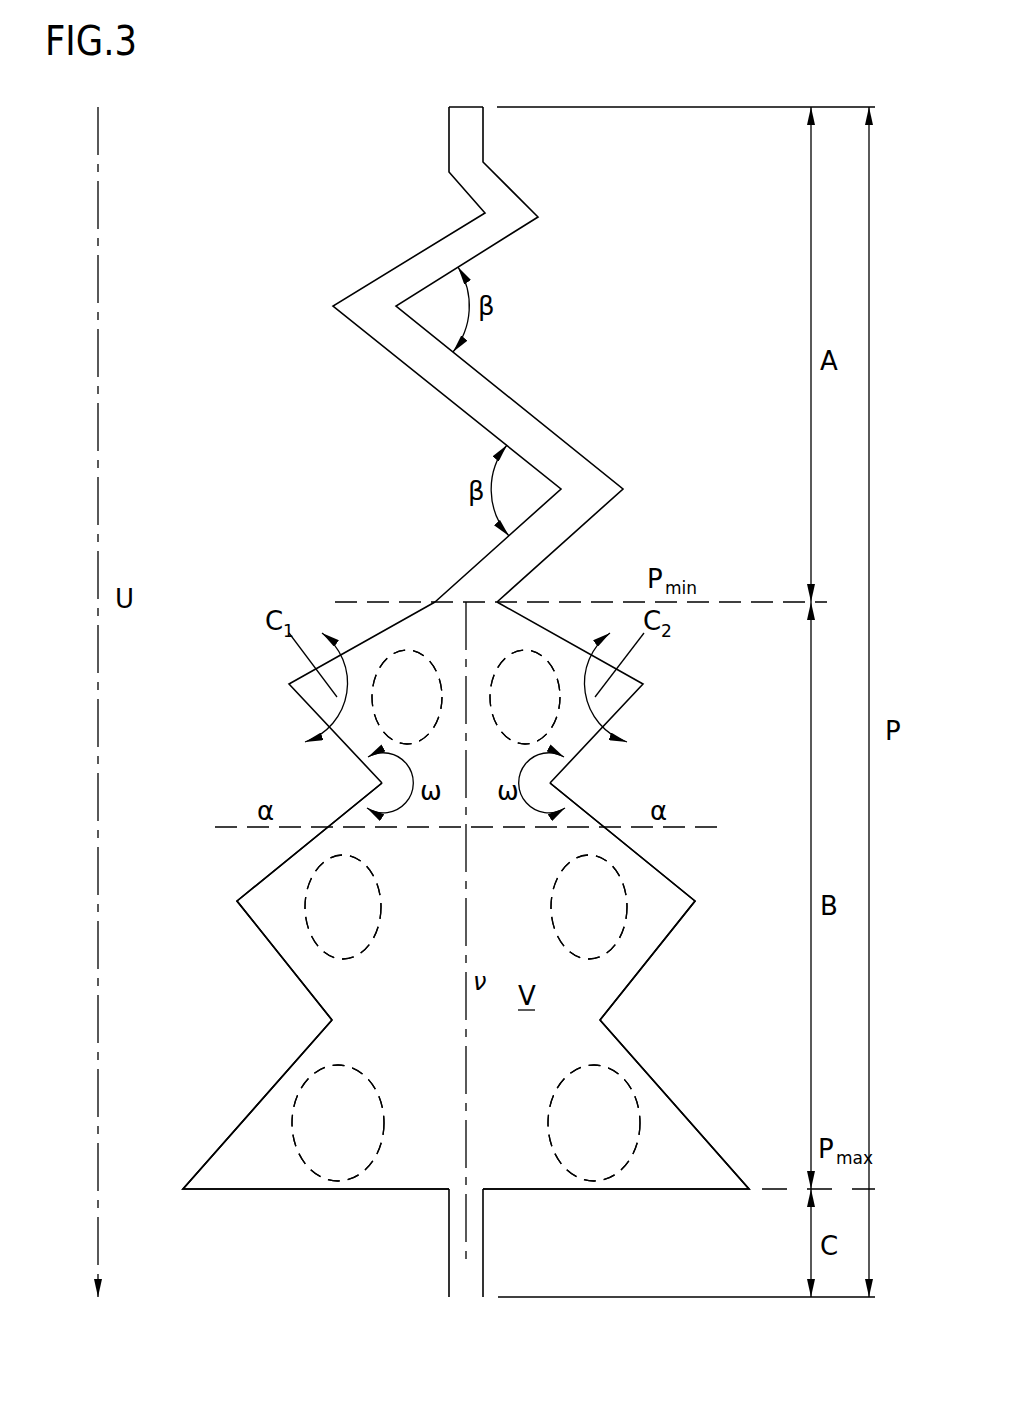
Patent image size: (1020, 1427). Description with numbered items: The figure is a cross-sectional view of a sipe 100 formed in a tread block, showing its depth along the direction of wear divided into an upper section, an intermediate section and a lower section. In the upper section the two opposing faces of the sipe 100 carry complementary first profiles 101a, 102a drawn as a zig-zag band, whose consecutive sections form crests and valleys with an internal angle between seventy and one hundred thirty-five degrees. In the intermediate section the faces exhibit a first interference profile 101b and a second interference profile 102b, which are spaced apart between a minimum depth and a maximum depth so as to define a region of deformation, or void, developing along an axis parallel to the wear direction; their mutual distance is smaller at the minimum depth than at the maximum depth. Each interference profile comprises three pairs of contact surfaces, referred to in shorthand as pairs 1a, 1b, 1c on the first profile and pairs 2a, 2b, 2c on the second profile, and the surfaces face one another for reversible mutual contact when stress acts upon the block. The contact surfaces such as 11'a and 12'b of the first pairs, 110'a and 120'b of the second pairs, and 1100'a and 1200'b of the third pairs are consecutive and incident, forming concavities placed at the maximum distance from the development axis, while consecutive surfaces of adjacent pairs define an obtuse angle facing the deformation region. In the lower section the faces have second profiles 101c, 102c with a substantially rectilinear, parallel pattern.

The sipe 100 is at (467, 702).
The first profile of first face 101a is at (375, 340).
The first profile of second face 102a is at (531, 412).
The first interference profile 101b is at (257, 1102).
The second interference profile 102b is at (663, 1087).
The second profile of first face 101c is at (449, 1212).
The second profile of second face 102c is at (483, 1215).
The first pair of contact surfaces of first profile 1a is at (403, 620).
The first pair of contact surfaces of second profile 2a is at (529, 620).
The second pair of contact surfaces of first profile 1b is at (318, 835).
The second pair of contact surfaces of second profile 2b is at (614, 835).
The third pair of contact surfaces of first profile 1c is at (313, 1041).
The third pair of contact surfaces of second profile 2c is at (619, 1041).
The contact surface 11'a is at (407, 697).
The contact surface 12'b is at (525, 697).
The contact surface 110'a is at (343, 907).
The contact surface 120'b is at (589, 907).
The contact surface 1100'a is at (338, 1123).
The contact surface 1200'b is at (594, 1123).